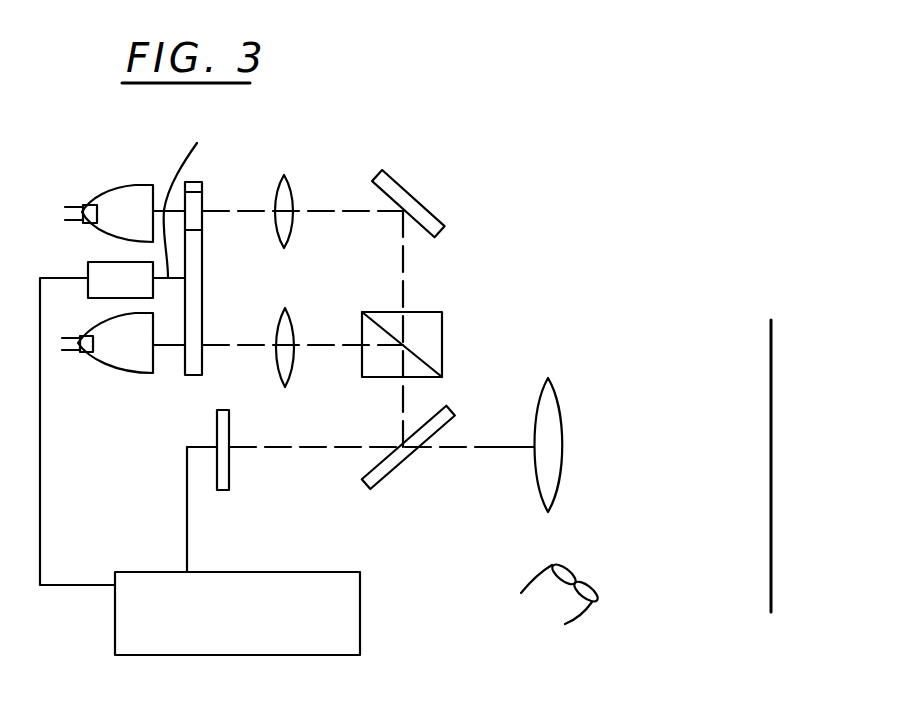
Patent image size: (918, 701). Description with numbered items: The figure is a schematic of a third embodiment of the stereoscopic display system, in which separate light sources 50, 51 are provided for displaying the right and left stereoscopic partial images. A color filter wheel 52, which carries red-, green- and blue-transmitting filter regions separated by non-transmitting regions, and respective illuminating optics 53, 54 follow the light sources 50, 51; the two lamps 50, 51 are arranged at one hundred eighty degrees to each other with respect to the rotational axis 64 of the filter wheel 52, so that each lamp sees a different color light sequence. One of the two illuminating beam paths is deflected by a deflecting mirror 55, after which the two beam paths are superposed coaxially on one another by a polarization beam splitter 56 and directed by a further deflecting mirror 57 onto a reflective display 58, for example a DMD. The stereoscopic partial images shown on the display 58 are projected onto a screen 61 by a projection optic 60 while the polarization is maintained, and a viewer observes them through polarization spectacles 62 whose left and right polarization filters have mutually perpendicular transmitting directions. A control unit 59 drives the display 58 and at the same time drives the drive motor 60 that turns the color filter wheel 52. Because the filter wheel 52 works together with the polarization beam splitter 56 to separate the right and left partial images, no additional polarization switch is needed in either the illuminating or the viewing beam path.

The light source 50 is at (130, 185).
The light source 51 is at (120, 366).
The color filter wheel 52 is at (203, 257).
The illuminating optic 53 is at (290, 177).
The illuminating optic 54 is at (293, 307).
The deflecting mirror 55 is at (428, 205).
The polarization beam splitter 56 is at (442, 325).
The deflecting mirror 57 is at (382, 470).
The reflective display 58 is at (229, 465).
The control unit 59 is at (360, 610).
The projection optic 60 is at (92, 262).
The screen 61 is at (771, 360).
The polarization spectacles 62 is at (590, 612).
The rotational axis 64 is at (189, 198).